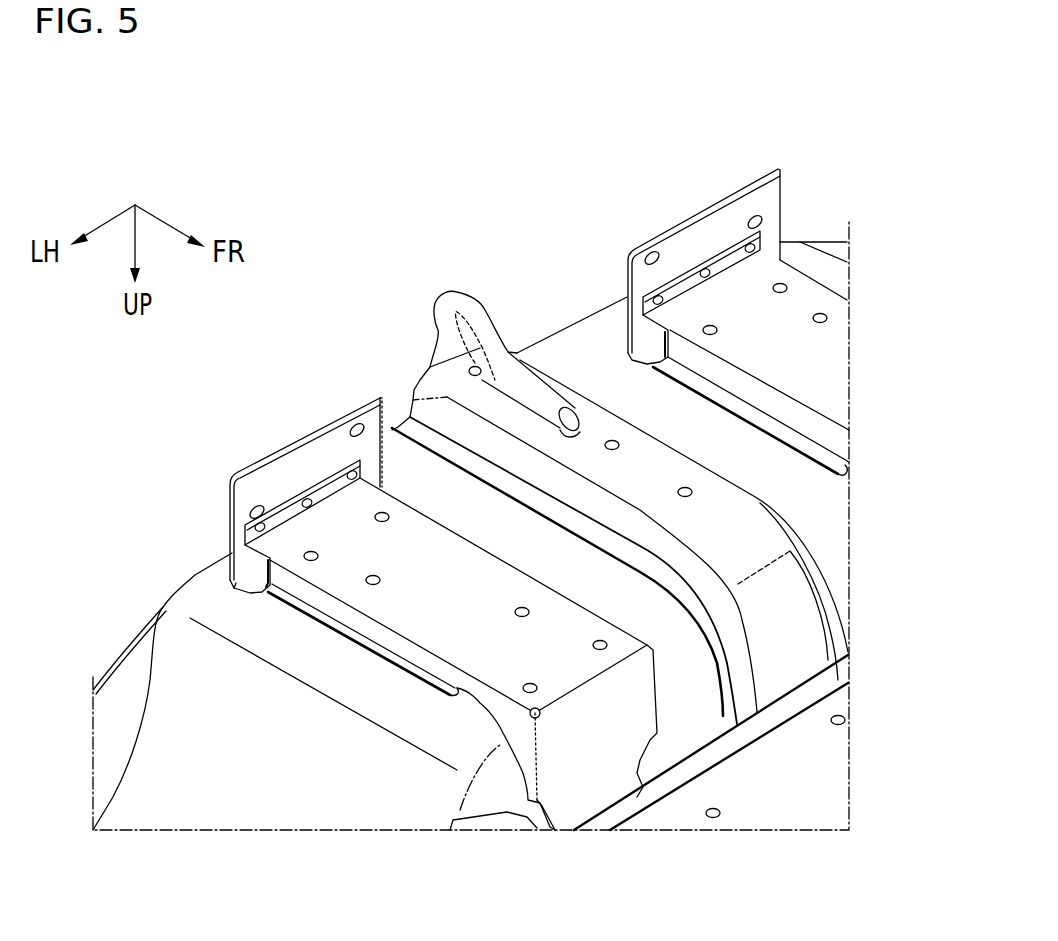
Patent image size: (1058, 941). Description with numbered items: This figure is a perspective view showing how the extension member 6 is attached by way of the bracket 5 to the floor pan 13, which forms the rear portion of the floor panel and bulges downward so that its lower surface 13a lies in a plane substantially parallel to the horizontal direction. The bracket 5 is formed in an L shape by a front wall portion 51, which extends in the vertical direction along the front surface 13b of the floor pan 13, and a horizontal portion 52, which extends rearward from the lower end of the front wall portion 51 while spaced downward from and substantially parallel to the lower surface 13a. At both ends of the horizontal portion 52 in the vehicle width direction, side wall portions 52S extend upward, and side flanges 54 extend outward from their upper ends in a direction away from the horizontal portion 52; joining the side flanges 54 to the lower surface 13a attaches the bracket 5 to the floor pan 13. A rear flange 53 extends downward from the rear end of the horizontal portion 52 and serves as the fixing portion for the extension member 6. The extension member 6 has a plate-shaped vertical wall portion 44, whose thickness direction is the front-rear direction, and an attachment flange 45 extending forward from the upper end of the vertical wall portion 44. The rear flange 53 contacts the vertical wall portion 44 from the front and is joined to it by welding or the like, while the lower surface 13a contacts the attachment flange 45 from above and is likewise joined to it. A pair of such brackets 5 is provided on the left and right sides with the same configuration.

The bracket 5 is at (478, 724).
The extension member 6 is at (271, 478).
The floor pan 13 is at (471, 526).
The lower surface 13a is at (570, 350).
The front surface 13b is at (688, 723).
The vertical wall portion 44 is at (298, 440).
The attachment flange 45 is at (253, 583).
The front wall portion 51 is at (603, 773).
The horizontal portion 52 is at (509, 653).
The side wall portion 52S is at (357, 618).
The rear flange 53 is at (340, 490).
The side flange 54 is at (330, 620).